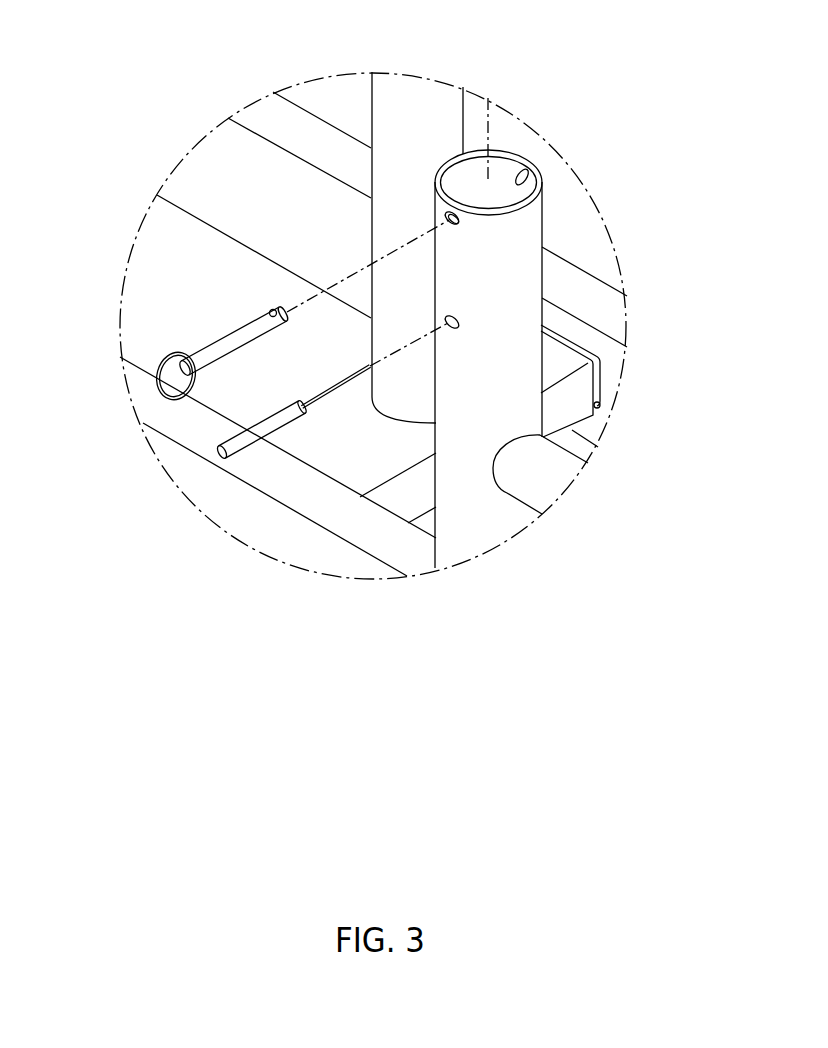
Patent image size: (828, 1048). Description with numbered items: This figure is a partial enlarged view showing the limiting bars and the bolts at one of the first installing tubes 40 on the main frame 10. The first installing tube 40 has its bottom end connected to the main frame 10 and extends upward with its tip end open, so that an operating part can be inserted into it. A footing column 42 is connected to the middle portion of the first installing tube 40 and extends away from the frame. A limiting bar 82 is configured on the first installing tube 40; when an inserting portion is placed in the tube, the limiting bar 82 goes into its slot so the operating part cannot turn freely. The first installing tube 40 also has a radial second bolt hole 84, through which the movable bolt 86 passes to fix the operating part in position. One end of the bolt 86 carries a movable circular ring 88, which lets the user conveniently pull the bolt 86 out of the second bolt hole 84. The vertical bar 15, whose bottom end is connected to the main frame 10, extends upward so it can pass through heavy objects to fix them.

The main frame 10 is at (592, 276).
The vertical bar 15 is at (371, 108).
The first installing tube 40 is at (543, 311).
The footing column 42 is at (575, 445).
The limiting bar 82 is at (217, 455).
The second bolt hole 84 is at (461, 220).
The bolt 86 is at (228, 332).
The circular ring 88 is at (160, 388).